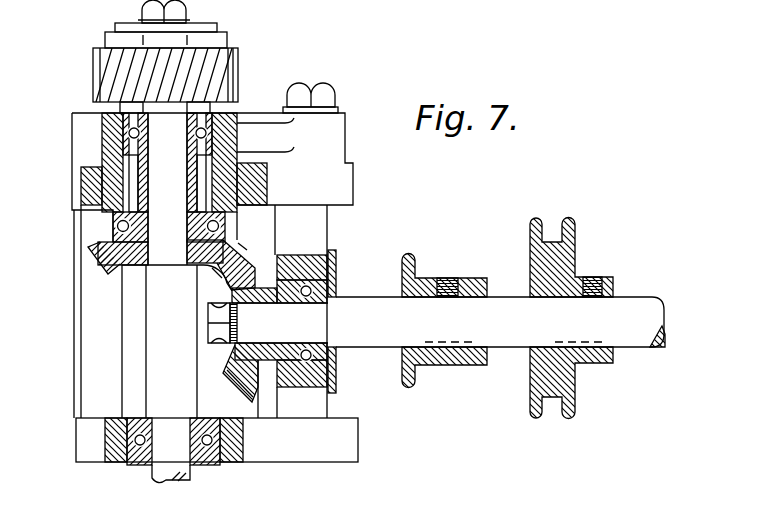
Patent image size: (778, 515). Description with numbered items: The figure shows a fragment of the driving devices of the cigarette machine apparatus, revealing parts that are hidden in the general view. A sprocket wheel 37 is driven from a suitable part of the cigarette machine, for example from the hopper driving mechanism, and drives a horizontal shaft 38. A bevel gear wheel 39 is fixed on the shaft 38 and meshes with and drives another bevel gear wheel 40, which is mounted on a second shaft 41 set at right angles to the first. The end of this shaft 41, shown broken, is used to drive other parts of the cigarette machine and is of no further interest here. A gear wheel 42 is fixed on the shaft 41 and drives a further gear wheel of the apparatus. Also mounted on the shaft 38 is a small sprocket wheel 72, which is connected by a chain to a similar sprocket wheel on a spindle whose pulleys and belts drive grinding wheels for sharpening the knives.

The sprocket wheel 37 is at (578, 242).
The shaft 38 is at (637, 340).
The bevel gear wheel 39 is at (250, 400).
The bevel gear wheel 40 is at (107, 262).
The shaft 41 is at (155, 368).
The gear wheel 42 is at (240, 67).
The small sprocket wheel 72 is at (447, 365).